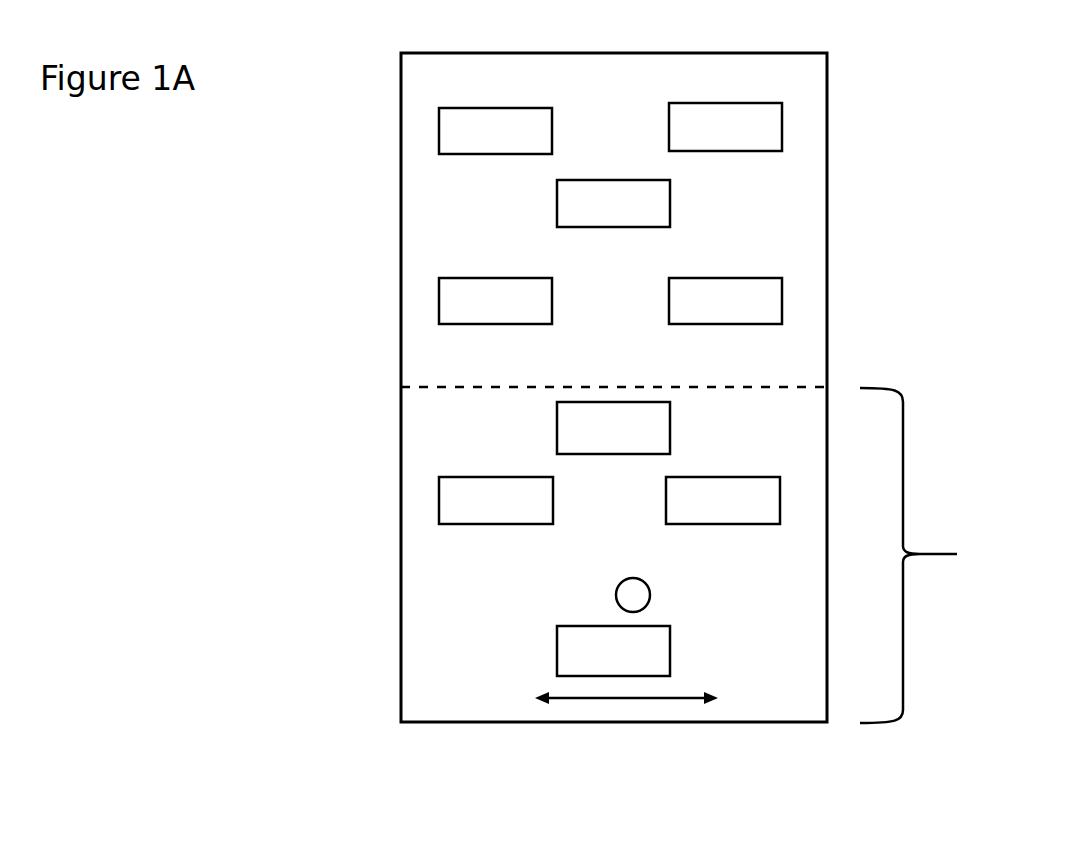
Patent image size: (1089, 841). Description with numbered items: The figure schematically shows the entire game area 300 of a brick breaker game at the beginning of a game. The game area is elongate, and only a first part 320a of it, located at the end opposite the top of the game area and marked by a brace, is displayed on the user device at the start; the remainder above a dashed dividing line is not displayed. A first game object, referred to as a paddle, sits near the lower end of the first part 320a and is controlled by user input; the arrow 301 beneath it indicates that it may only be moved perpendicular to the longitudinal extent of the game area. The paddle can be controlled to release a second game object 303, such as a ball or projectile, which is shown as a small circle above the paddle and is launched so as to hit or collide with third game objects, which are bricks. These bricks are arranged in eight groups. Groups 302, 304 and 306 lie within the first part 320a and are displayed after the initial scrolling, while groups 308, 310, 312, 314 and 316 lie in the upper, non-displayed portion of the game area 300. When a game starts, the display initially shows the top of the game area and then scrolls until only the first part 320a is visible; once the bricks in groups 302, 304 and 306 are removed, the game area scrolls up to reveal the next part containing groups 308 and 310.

The computing device 300 is at (630, 677).
The arrow 301 is at (568, 691).
The group of third game objects 302 is at (496, 500).
The second game object 303 is at (663, 598).
The group of third game objects 304 is at (723, 500).
The group of third game objects 306 is at (613, 428).
The group of third game objects 308 is at (495, 301).
The group of third game objects 310 is at (725, 301).
The group of third game objects 312 is at (613, 203).
The group of third game objects 314 is at (495, 131).
The group of third game objects 316 is at (725, 127).
The first part of the game area 320a is at (947, 555).